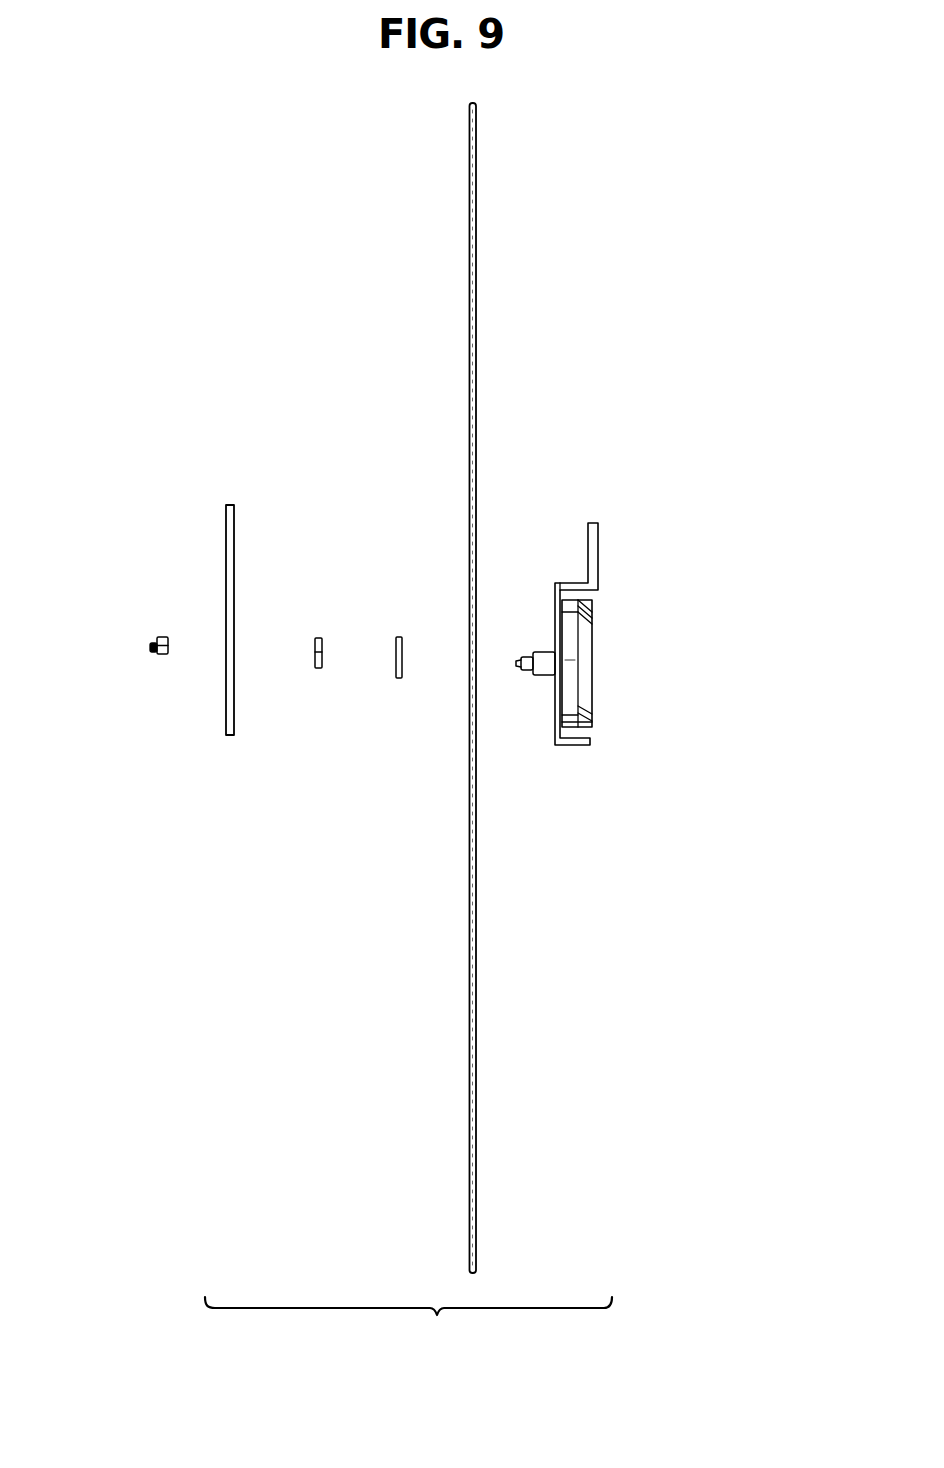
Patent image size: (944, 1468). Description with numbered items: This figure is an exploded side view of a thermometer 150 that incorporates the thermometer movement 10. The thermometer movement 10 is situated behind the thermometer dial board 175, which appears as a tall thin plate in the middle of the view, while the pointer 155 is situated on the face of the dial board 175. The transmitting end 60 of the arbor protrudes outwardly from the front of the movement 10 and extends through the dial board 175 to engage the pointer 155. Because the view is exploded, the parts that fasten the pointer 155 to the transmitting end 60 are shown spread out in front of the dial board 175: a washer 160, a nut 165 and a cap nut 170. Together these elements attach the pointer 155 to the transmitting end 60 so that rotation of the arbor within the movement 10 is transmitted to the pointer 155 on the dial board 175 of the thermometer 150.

The thermometer movement 10 is at (630, 650).
The transmitting end 60 is at (517, 655).
The thermometer 150 is at (313, 224).
The pointer 155 is at (226, 522).
The washer 160 is at (398, 678).
The nut 165 is at (316, 668).
The cap nut 170 is at (155, 640).
The thermometer dial board 175 is at (476, 150).